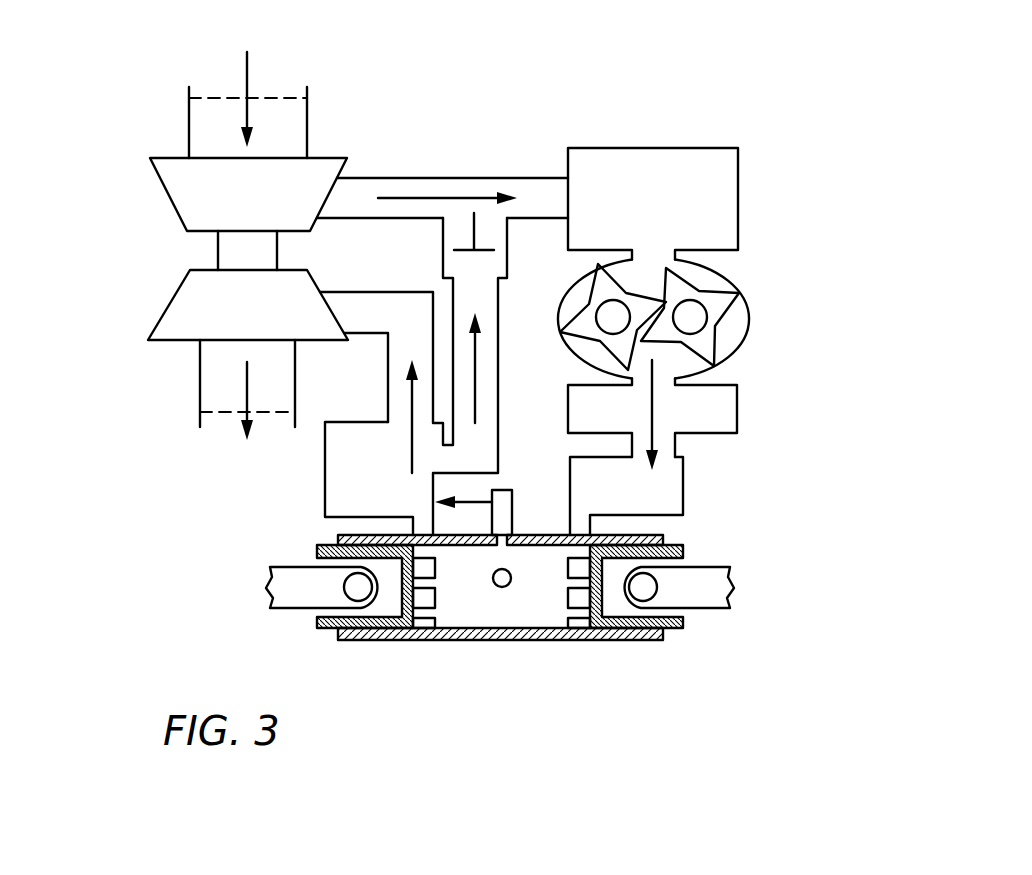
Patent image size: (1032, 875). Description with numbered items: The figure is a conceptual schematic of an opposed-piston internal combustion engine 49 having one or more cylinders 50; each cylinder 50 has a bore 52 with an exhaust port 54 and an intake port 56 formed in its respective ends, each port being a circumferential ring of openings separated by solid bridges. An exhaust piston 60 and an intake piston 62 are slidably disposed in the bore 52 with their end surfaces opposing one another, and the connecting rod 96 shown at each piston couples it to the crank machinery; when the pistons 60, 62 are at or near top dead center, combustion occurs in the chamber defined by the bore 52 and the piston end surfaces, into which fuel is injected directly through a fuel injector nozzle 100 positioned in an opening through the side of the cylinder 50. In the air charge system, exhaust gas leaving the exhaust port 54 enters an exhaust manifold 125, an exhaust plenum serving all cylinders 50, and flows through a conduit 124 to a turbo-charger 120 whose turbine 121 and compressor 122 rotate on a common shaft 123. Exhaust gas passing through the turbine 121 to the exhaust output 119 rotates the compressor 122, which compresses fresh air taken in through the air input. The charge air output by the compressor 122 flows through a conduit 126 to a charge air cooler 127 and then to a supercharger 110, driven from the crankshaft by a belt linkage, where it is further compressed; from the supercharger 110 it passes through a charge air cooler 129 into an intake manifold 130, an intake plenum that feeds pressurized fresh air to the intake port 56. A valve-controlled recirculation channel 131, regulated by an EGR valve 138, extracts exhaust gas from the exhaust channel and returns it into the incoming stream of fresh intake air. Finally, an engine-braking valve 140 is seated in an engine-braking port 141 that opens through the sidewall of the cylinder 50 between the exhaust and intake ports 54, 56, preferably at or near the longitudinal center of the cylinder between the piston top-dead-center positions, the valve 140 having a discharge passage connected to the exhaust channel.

The internal combustion engine 49 is at (828, 412).
The cylinder 50 is at (423, 640).
The bore 52 is at (502, 628).
The exhaust port 54 is at (463, 620).
The intake port 56 is at (540, 632).
The exhaust piston 60 is at (322, 545).
The intake piston 62 is at (673, 545).
The connecting rod 96 is at (632, 605).
The fuel injector nozzle 100 is at (510, 580).
The supercharger 110 is at (735, 272).
The exhaust output 119 is at (200, 367).
The turbo-charger 120 is at (152, 252).
The turbine 121 is at (162, 312).
The compressor 122 is at (165, 194).
The common shaft 123 is at (277, 250).
The conduit 124 is at (388, 355).
The exhaust manifold 125 is at (326, 470).
The conduit 126 is at (430, 178).
The charge air cooler 127 is at (738, 208).
The charge air cooler 129 is at (738, 405).
The intake manifold 130 is at (685, 493).
The recirculation channel 131 is at (498, 350).
The EGR valve 138 is at (478, 228).
The engine-braking valve 140 is at (513, 500).
The engine-braking port 141 is at (507, 540).